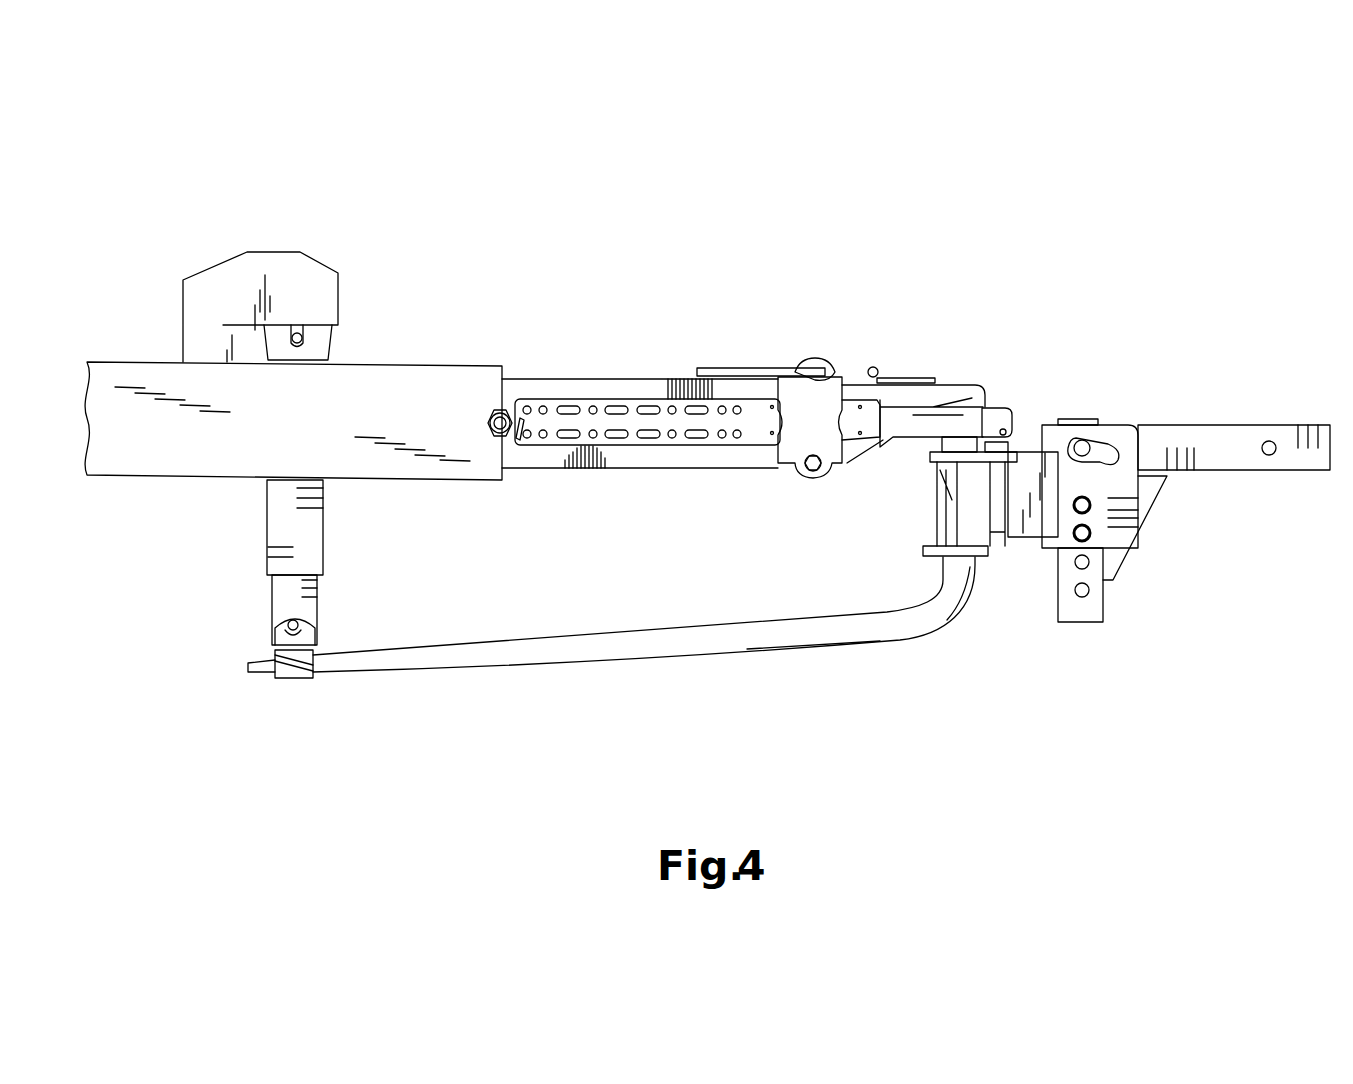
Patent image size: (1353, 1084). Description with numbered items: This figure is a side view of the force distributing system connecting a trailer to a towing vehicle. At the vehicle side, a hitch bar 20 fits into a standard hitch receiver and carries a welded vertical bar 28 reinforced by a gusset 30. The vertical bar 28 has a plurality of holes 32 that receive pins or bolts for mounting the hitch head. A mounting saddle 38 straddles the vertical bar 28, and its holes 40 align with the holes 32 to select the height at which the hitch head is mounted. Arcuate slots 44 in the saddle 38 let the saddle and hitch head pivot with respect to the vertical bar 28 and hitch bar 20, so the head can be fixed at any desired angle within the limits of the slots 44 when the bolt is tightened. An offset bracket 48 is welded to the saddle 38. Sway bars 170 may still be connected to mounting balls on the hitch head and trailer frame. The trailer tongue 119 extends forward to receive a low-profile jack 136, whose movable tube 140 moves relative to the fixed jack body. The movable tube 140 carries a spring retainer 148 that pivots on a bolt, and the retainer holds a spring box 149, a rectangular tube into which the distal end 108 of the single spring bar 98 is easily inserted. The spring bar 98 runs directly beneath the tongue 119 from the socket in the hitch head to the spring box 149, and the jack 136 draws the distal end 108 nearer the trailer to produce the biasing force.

The jack 136 is at (202, 235).
The trailer tongue 119 is at (590, 378).
The sway bars 170 is at (755, 423).
The offset bracket 48 is at (1033, 450).
The arcuate slots 44 is at (1098, 440).
The mounting saddle 38 is at (1123, 432).
The hitch bar 20 is at (1247, 423).
The gusset 30 is at (1145, 507).
The holes 40 is at (1093, 533).
The holes 32 is at (1073, 590).
The vertical bar 28 is at (1082, 622).
The spring bar 98 is at (903, 638).
The movable tube 140 is at (313, 608).
The spring retainer 148 is at (258, 633).
The spring box 149 is at (293, 683).
The distal end 108 is at (257, 675).